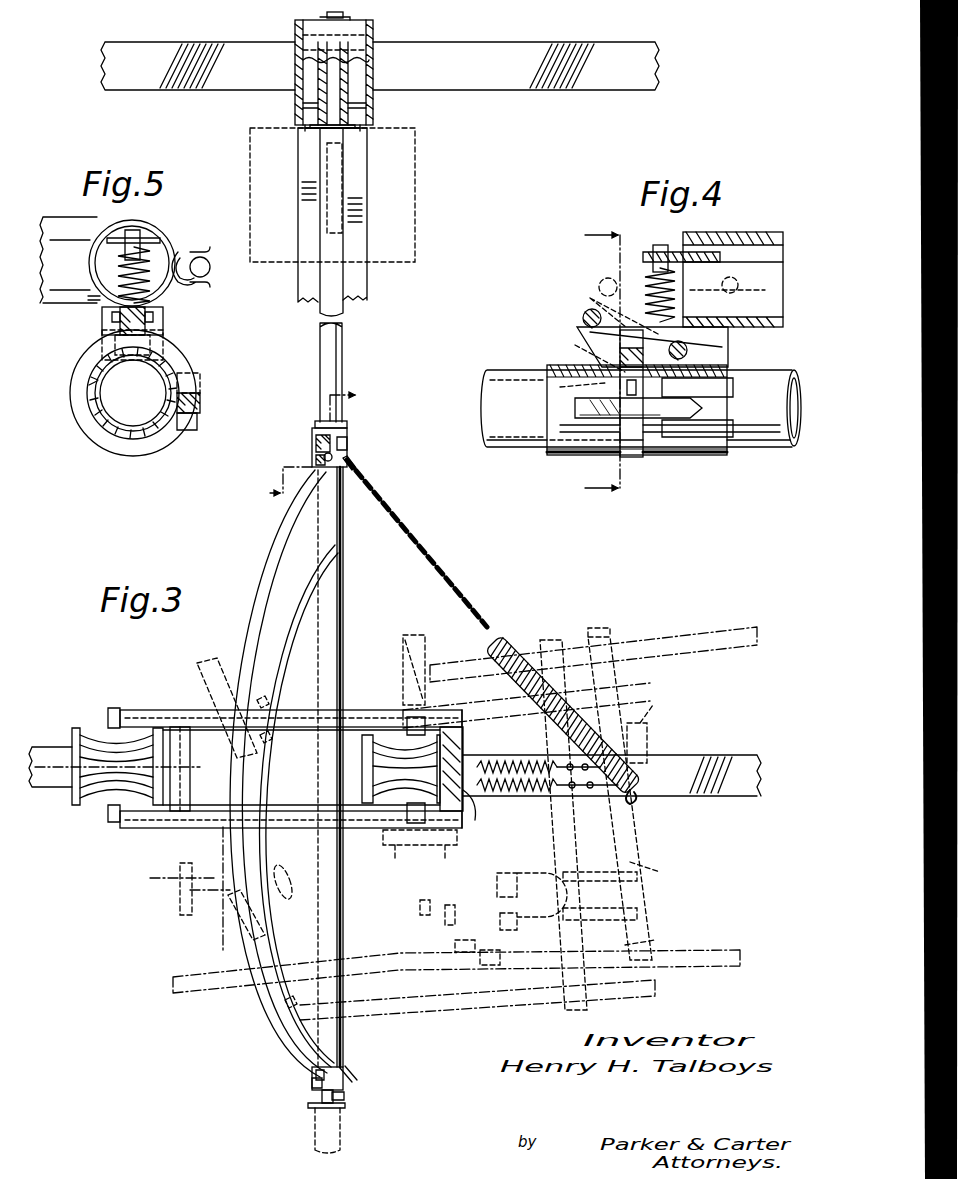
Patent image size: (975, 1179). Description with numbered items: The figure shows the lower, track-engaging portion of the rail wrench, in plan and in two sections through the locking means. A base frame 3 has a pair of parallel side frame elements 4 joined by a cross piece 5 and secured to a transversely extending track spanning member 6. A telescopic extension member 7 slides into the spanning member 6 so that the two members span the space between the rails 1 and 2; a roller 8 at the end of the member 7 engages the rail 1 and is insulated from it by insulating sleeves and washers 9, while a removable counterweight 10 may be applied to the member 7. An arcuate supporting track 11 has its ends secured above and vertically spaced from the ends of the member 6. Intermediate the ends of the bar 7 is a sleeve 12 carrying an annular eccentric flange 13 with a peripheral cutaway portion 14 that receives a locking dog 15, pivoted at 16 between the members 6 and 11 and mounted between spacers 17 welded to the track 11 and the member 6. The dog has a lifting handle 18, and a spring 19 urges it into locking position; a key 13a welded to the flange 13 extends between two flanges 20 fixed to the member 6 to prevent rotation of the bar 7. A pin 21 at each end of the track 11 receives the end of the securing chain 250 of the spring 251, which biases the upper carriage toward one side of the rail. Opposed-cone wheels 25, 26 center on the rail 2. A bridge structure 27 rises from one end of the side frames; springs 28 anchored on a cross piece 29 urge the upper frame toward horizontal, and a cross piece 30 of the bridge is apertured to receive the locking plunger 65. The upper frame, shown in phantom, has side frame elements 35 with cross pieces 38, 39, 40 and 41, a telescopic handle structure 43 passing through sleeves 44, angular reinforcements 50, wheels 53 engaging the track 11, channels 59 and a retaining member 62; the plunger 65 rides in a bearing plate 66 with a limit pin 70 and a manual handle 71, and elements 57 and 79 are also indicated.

In FIG. 3, the rail 1 is at (662, 76).
In FIG. 3, the rail 2 is at (45, 790).
In FIG. 3, the base frame 3 is at (170, 710).
In FIG. 3, the side frame element 4 is at (135, 858).
In FIG. 3, the cross piece 5 is at (183, 768).
In FIG. 4, the cross piece 5 is at (593, 362).
In FIG. 3, the track spanning member 6 is at (343, 615).
In FIG. 4, the track spanning member 6 is at (705, 455).
In FIG. 3, the telescopic extension member 7 is at (337, 350).
In FIG. 4, the telescopic extension member 7 is at (776, 386).
In FIG. 5, the telescopic extension member 7 is at (136, 426).
In FIG. 3, the roller 8 is at (375, 100).
In FIG. 3, the insulating sleeves and washers 9 is at (345, 16).
In FIG. 3, the counterweight 10 is at (415, 195).
In FIG. 3, the arcuate supporting track 11 is at (262, 566).
In FIG. 4, the arcuate supporting track 11 is at (765, 240).
In FIG. 5, the arcuate supporting track 11 is at (165, 230).
In FIG. 3, the sleeve 12 is at (315, 424).
In FIG. 4, the sleeve 12 is at (550, 365).
In FIG. 5, the sleeve 12 is at (106, 434).
In FIG. 3, the annular eccentric flange 13 is at (347, 445).
In FIG. 4, the annular eccentric flange 13 is at (635, 458).
In FIG. 5, the annular eccentric flange 13 is at (196, 368).
In FIG. 3, the key or lug 13a is at (312, 440).
In FIG. 4, the key or lug 13a is at (625, 438).
In FIG. 5, the key or lug 13a is at (200, 403).
In FIG. 5, the peripheral cutaway portion 14 is at (145, 322).
In FIG. 3, the locking dog 15 is at (347, 428).
In FIG. 4, the locking dog 15 is at (590, 298).
In FIG. 5, the locking dog 15 is at (112, 318).
In FIG. 4, the pivot 16 is at (690, 352).
In FIG. 5, the pivot 16 is at (163, 342).
In FIG. 5, the spacer 17 is at (163, 312).
In FIG. 3, the lifting handle or bar 18 is at (347, 436).
In FIG. 4, the lifting handle or bar 18 is at (600, 286).
In FIG. 4, the spring 19 is at (644, 262).
In FIG. 5, the spring 19 is at (120, 270).
In FIG. 3, the flange 20 is at (312, 463).
In FIG. 4, the flange 20 is at (730, 430).
In FIG. 5, the flange 20 is at (200, 383).
In FIG. 3, the pin 21 is at (358, 466).
In FIG. 5, the pin 21 is at (210, 272).
In FIG. 3, the rail-engaging wheel 25 is at (86, 728).
In FIG. 3, the rail-engaging wheel 26 is at (387, 735).
In FIG. 3, the bridge structure 27 is at (468, 757).
In FIG. 3, the spring 28 is at (512, 760).
In FIG. 3, the cross piece 29 is at (475, 820).
In FIG. 3, the cross piece 30 is at (430, 836).
In FIG. 3, the side frame element 35 is at (595, 677).
In FIG. 3, the cross piece 38 is at (220, 845).
In FIG. 3, the cross piece 39 is at (455, 885).
In FIG. 3, the cross piece 40 is at (555, 845).
In FIG. 3, the cross piece 41 is at (640, 832).
In FIG. 3, the telescopic handle structure 43 is at (672, 635).
In FIG. 3, the sleeve 44 is at (440, 1010).
In FIG. 3, the angular reinforcement 50 is at (212, 665).
In FIG. 3, the wheel 53 is at (268, 694).
In FIG. 3, the bolt 57 is at (283, 864).
In FIG. 3, the channel 59 is at (635, 905).
In FIG. 3, the retaining member 62 is at (570, 880).
In FIG. 3, the locking plunger 65 is at (405, 880).
In FIG. 3, the bearing plate 66 is at (435, 892).
In FIG. 3, the limit pin 70 is at (235, 900).
In FIG. 3, the manual handle 71 is at (178, 878).
In FIG. 3, the bracket 79 is at (649, 730).
In FIG. 3, the securing chain 250 is at (410, 530).
In FIG. 5, the securing chain 250 is at (205, 250).
In FIG. 3, the spring 251 is at (505, 650).